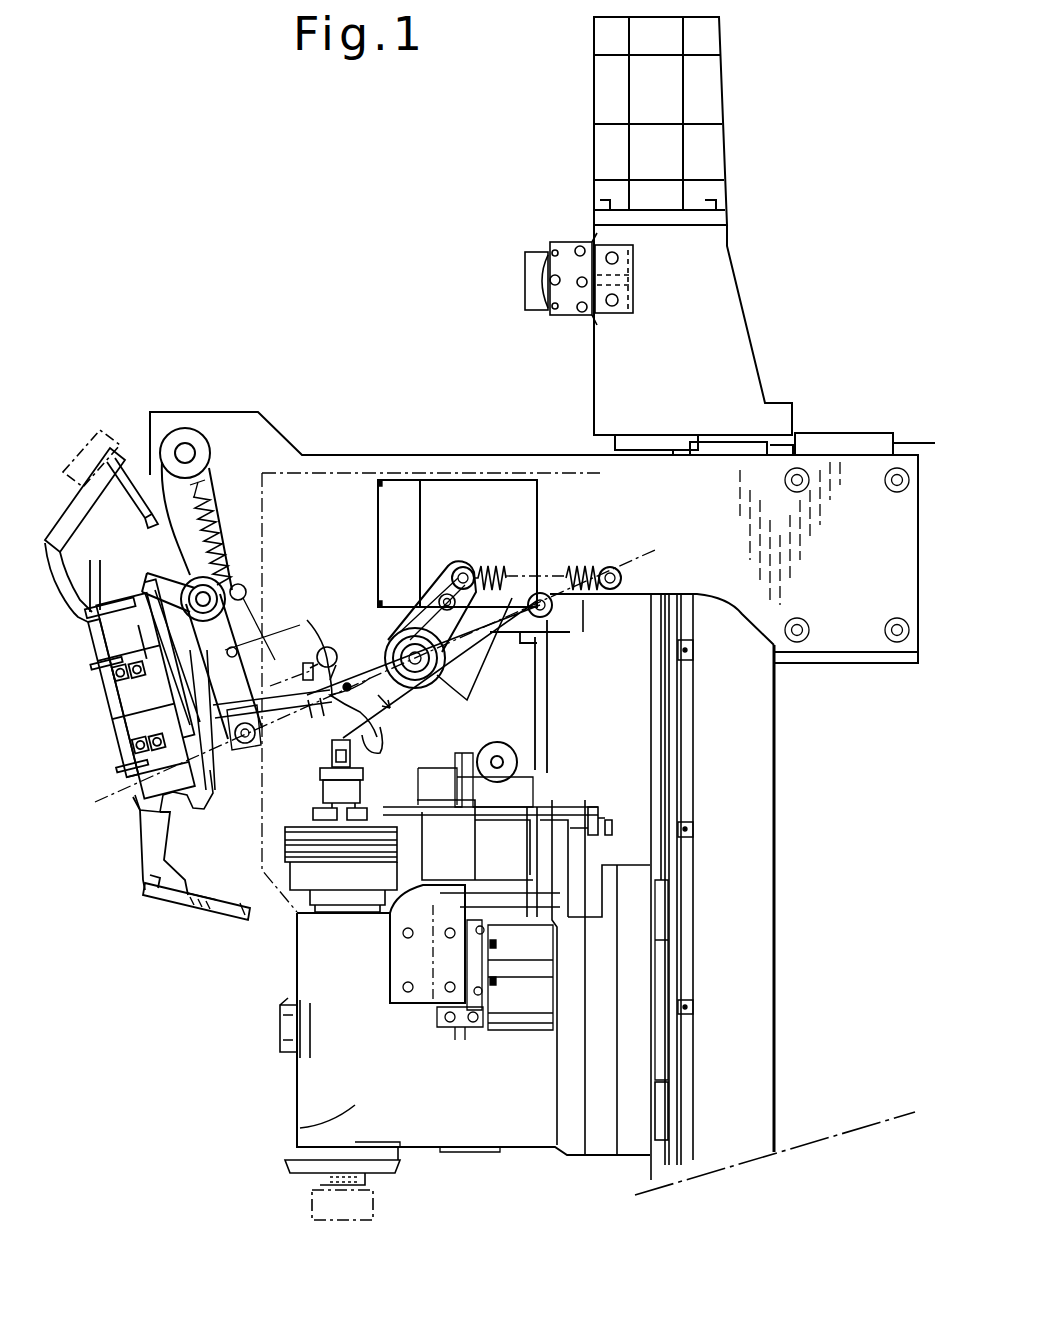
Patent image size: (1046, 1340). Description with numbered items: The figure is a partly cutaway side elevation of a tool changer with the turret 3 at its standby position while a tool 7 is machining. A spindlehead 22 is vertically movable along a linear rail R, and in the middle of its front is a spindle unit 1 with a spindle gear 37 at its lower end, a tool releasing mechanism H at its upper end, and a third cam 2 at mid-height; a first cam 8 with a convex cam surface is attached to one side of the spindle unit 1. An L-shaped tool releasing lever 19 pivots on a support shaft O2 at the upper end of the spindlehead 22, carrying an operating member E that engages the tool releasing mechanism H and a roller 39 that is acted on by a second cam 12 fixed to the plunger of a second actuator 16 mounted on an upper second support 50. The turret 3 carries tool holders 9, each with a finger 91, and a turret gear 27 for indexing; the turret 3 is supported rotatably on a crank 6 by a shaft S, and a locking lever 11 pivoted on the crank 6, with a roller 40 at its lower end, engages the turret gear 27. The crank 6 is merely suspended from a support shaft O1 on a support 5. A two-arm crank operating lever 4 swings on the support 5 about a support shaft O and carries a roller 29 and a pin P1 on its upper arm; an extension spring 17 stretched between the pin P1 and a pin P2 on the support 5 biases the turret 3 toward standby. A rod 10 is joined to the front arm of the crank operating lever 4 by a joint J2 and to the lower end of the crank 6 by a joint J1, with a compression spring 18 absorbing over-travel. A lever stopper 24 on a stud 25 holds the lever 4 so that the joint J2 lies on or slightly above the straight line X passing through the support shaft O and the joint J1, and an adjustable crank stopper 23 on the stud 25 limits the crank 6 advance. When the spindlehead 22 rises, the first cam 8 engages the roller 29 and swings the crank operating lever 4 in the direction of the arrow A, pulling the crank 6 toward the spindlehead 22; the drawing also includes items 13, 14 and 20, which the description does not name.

The spindle unit 1 is at (303, 1098).
The third cam 2 is at (278, 1028).
The turret 3 is at (150, 832).
The crank operating lever 4 is at (382, 632).
The support 5 is at (224, 425).
The crank 6 is at (162, 453).
The tool 7 is at (378, 1212).
The first cam 8 is at (385, 968).
The tool holder 9 is at (182, 907).
The rod 10 is at (332, 757).
The locking lever 11 is at (88, 598).
The second cam 12 is at (545, 262).
The block 13 is at (460, 500).
The column 14 is at (715, 90).
The second actuator 16 is at (530, 298).
The extension spring 17 is at (592, 620).
The compression spring 18 is at (112, 718).
The tool releasing lever 19 is at (547, 640).
The slider 20 is at (668, 1126).
The spindlehead 22 is at (305, 1128).
The crank stopper 23 is at (320, 648).
The lever stopper 24 is at (338, 703).
The stud 25 is at (340, 655).
The turret gear 27 is at (196, 815).
The roller 29 is at (445, 592).
The spindle gear 37 is at (398, 1165).
The roller 39 is at (550, 612).
The roller 40 is at (243, 648).
The upper second support 50 is at (604, 350).
The finger 91 is at (238, 912).
The arrow A is at (394, 709).
The operating member E is at (322, 775).
The tool releasing mechanism H is at (323, 803).
The support shaft O is at (465, 700).
The support shaft O1 is at (185, 445).
The support shaft O2 is at (490, 760).
The pin P1 is at (466, 568).
The pin P2 is at (616, 568).
The joint J1 is at (248, 746).
The joint J2 is at (378, 728).
The linear rail R is at (668, 1060).
The shaft S is at (110, 697).
The straight line X— X is at (652, 548).